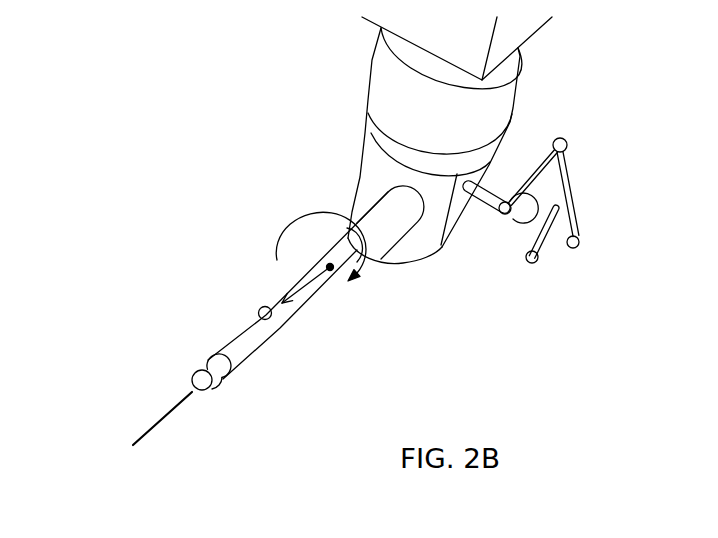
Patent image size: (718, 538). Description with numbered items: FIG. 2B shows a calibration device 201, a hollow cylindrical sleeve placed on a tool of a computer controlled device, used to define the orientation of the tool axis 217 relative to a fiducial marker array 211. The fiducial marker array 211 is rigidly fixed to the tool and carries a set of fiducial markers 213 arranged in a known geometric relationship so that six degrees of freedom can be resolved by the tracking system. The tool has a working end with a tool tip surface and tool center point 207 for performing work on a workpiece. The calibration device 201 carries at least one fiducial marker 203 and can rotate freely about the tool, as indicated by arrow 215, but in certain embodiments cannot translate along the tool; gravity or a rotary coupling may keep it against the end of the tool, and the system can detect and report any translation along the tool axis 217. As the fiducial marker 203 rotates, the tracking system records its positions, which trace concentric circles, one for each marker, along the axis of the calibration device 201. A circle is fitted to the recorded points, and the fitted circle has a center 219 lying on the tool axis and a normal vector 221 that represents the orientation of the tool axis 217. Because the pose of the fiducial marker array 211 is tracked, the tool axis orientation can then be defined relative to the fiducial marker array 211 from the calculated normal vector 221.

The calibration device 201 is at (260, 347).
The fiducial marker 203 is at (259, 307).
The tool center point 207 is at (197, 363).
The fiducial marker array 211 is at (560, 172).
The fiducial markers 213 is at (573, 248).
The arrow 215 is at (290, 222).
The tool axis 217 is at (167, 413).
The center 219 is at (334, 272).
The normal vector 221 is at (302, 297).